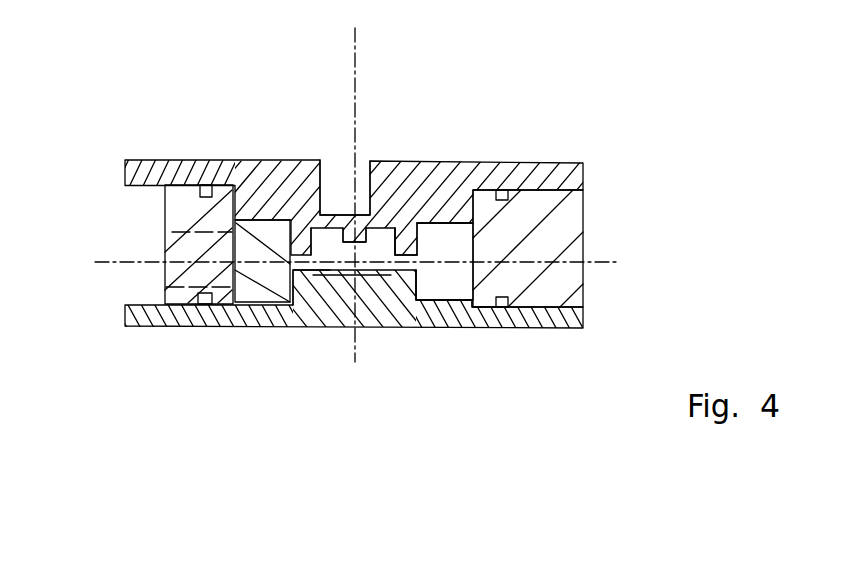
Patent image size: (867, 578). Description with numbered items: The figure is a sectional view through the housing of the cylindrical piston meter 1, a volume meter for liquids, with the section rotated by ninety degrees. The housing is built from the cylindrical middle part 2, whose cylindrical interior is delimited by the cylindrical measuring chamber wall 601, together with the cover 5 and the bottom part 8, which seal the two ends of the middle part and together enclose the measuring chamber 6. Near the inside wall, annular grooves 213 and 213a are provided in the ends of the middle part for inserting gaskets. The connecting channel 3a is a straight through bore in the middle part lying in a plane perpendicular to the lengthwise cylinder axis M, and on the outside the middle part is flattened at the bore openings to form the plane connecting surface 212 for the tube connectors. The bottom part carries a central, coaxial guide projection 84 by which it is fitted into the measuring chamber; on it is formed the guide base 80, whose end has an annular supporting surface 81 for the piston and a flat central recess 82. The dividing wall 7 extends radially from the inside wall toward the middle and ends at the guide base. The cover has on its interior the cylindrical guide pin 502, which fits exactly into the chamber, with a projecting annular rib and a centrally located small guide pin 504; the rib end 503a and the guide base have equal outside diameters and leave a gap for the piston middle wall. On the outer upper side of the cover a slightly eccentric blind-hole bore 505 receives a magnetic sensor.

The cylindrical piston meter 1 is at (250, 150).
The cylindrical middle part 2 is at (558, 235).
The connecting channel 3a is at (194, 302).
The cover 5 is at (285, 178).
The measuring chamber 6 is at (445, 290).
The dividing wall 7 is at (252, 231).
The bottom part 8 is at (184, 287).
The guide base 80 is at (420, 297).
The annular supporting surface 81 is at (304, 270).
The flat central recess 82 is at (374, 246).
The guide projection 84 is at (473, 305).
The plane connecting surface 212 is at (165, 217).
The annular groove 213 is at (535, 164).
The annular groove 213a is at (212, 328).
The cylindrical guide pin 502 is at (453, 197).
The end of annular rib 503a is at (404, 247).
The small guide pin 504 is at (354, 245).
The bore 505 is at (320, 168).
The cylindrical measuring chamber wall 601 is at (503, 308).
The lengthwise cylinder axis M is at (357, 73).